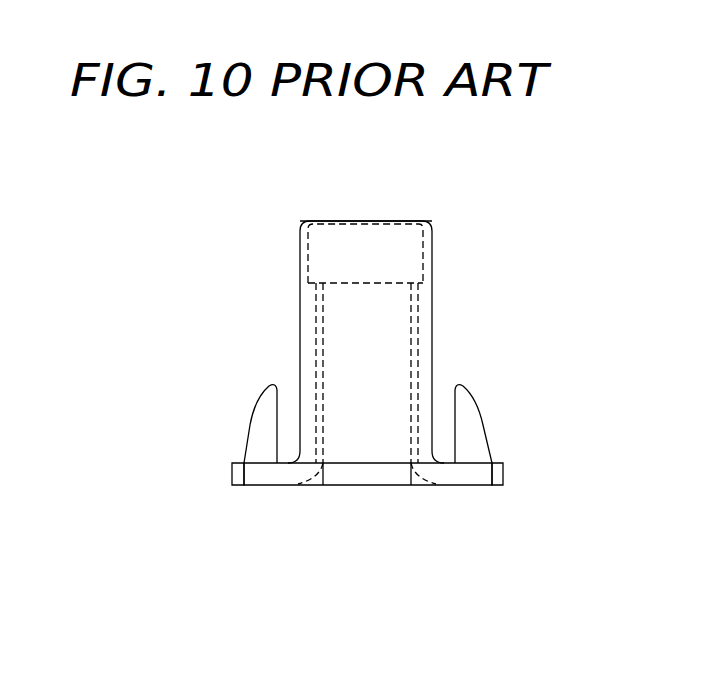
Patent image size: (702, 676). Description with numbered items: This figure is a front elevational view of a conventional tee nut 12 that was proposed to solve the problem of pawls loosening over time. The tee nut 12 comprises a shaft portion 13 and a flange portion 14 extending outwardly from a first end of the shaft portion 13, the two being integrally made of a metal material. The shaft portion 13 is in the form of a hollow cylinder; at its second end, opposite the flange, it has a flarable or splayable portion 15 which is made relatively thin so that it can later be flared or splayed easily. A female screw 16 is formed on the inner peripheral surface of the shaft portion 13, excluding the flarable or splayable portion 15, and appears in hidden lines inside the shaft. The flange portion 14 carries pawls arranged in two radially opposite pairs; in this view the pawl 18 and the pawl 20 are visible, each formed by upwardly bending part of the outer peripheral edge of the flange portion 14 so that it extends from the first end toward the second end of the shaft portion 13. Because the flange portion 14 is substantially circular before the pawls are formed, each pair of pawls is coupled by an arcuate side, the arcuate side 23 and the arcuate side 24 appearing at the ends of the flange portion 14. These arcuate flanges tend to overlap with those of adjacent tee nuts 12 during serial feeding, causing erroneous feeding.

The tee nut 12 is at (237, 168).
The shaft portion 13 is at (436, 277).
The flange portion 14 is at (445, 477).
The flarable or splayable portion 15 is at (299, 250).
The female screw 16 is at (316, 325).
The pawl 18 is at (255, 422).
The pawl 20 is at (480, 410).
The arcuate side 23 is at (232, 469).
The arcuate side 24 is at (503, 468).